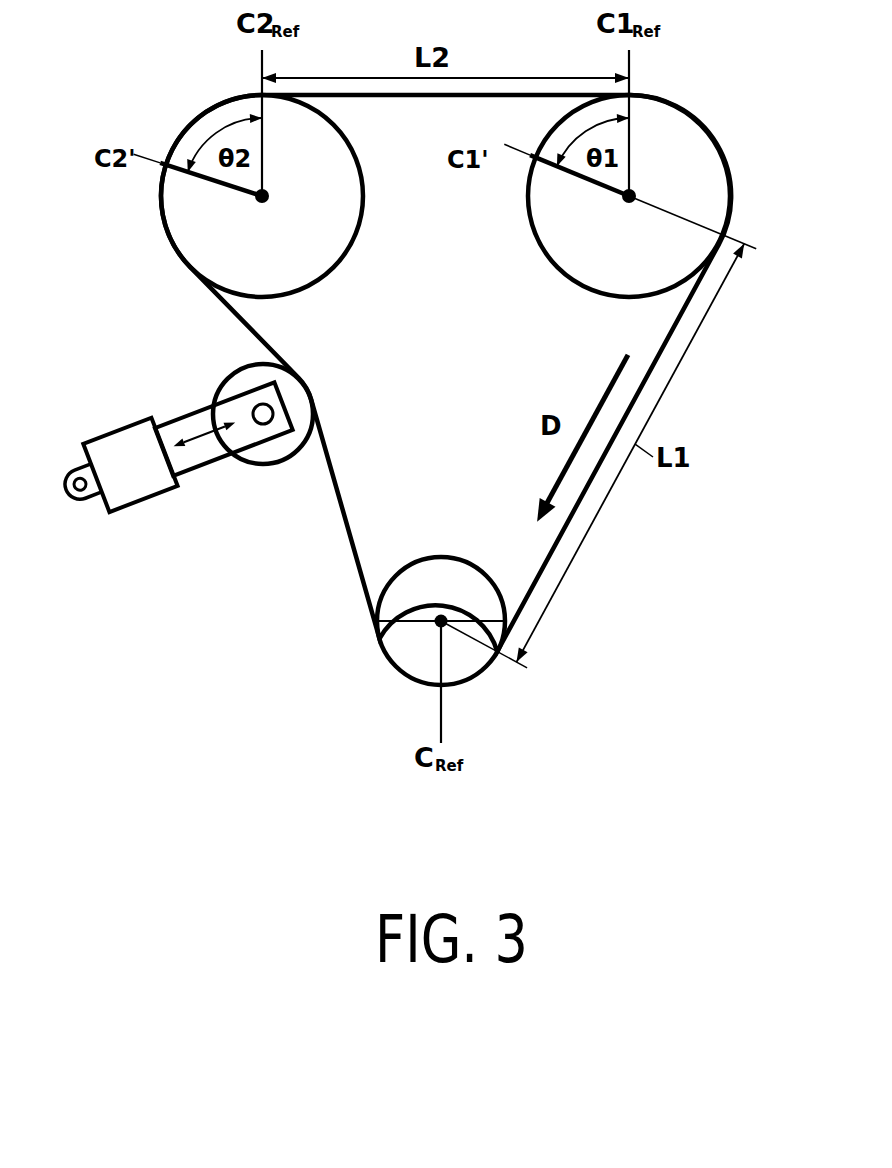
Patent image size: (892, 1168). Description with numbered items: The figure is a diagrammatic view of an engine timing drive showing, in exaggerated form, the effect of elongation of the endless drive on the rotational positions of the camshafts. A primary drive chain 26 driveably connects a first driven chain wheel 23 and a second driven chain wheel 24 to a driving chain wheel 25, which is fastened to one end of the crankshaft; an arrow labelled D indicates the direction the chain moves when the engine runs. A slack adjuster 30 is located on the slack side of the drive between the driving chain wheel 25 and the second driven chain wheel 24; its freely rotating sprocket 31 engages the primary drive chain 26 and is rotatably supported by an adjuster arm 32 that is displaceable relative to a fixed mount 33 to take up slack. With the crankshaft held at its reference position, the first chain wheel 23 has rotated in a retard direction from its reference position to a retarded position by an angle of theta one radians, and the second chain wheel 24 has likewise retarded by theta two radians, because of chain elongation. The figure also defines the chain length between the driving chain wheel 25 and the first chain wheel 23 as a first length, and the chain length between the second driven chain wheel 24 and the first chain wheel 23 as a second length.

The first driven chain wheel 23 is at (525, 210).
The second driven chain wheel 24 is at (162, 228).
The driving chain wheel 25 is at (440, 556).
The primary drive chain 26 is at (275, 333).
The slack adjuster 30 is at (183, 475).
The sprocket 31 is at (263, 465).
The adjuster arm 32 is at (224, 428).
The fixed mount 33 is at (115, 471).